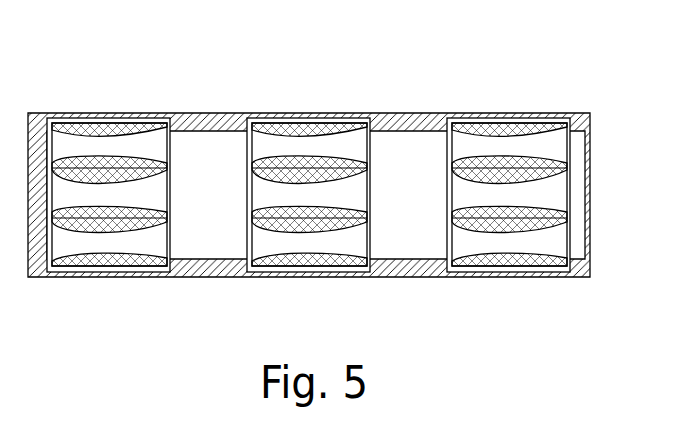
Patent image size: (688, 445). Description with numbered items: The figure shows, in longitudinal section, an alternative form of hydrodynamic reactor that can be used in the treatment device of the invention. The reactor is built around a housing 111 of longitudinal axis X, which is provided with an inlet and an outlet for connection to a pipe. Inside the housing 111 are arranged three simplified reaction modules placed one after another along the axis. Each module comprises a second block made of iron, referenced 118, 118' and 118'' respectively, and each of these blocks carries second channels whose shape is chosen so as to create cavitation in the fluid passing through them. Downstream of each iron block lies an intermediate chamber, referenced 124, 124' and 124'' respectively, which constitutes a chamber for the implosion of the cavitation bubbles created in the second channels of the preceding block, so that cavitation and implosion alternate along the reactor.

The housing 111 is at (221, 123).
The second block made of iron 118 is at (108, 228).
The second block made of iron 118' is at (308, 228).
The second block made of iron 118'' is at (508, 229).
The intermediate chamber 124 is at (213, 294).
The intermediate chamber 124' is at (420, 294).
The intermediate chamber 124'' is at (600, 296).